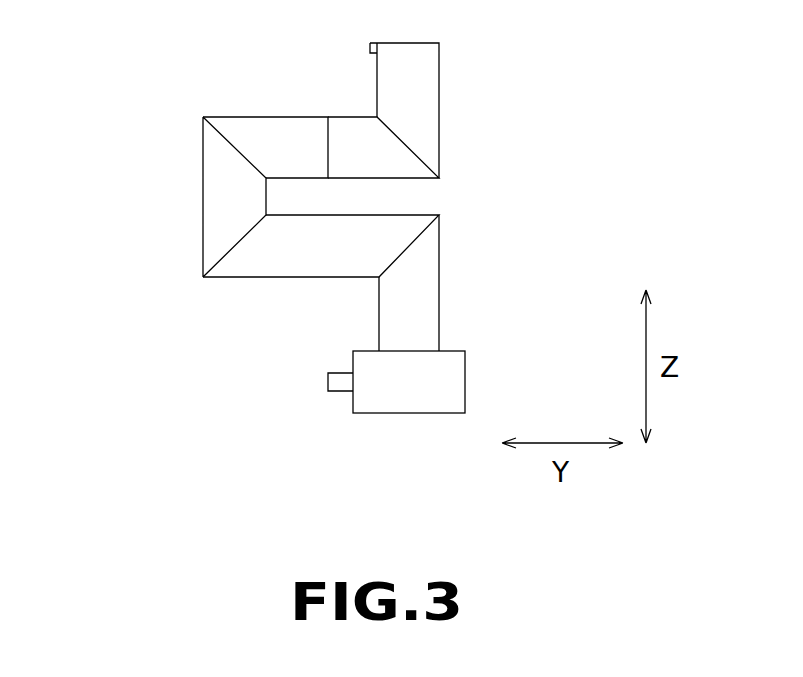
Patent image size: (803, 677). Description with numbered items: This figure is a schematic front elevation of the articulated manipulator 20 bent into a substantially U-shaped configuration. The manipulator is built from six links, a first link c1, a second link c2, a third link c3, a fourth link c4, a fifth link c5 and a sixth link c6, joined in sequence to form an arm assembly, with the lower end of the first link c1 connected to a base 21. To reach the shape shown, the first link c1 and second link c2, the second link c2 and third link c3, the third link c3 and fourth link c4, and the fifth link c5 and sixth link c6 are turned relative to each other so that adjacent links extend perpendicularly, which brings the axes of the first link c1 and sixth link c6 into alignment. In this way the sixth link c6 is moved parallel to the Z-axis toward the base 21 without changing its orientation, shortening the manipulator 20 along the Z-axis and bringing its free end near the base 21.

The articulated manipulator 20 is at (164, 112).
The base 21 is at (455, 380).
The first link c1 is at (432, 291).
The second link c2 is at (289, 268).
The third link c3 is at (213, 204).
The fourth link c4 is at (265, 128).
The fifth link c5 is at (348, 128).
The sixth link c6 is at (420, 83).